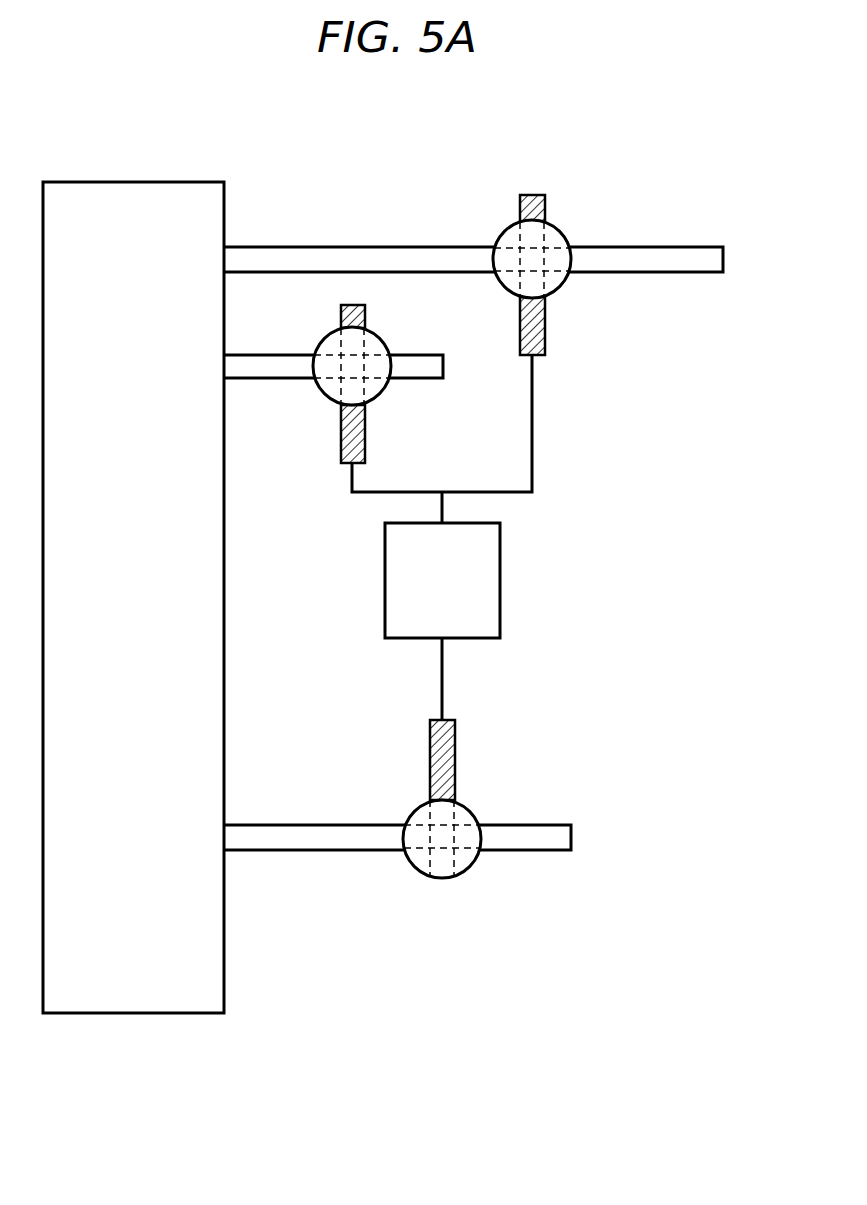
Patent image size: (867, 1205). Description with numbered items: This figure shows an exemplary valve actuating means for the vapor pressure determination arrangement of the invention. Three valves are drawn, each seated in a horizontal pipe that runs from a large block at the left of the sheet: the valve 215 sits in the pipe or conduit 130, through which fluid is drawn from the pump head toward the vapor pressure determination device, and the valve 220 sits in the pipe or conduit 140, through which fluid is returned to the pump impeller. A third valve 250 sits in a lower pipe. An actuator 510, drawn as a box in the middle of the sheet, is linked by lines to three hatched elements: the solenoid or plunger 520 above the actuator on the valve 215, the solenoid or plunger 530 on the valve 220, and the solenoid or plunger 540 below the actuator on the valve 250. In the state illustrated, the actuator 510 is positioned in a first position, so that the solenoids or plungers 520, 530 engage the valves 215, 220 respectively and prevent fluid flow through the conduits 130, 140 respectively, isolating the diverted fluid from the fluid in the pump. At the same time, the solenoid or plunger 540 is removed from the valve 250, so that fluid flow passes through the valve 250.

The conduit 130 is at (677, 245).
The conduit 140 is at (415, 353).
The valve 215 is at (570, 228).
The valve 220 is at (323, 397).
The valve 250 is at (440, 880).
The actuator 510 is at (500, 588).
The solenoid or plunger 520 is at (545, 335).
The solenoid or plunger 530 is at (365, 443).
The solenoid or plunger 540 is at (455, 762).